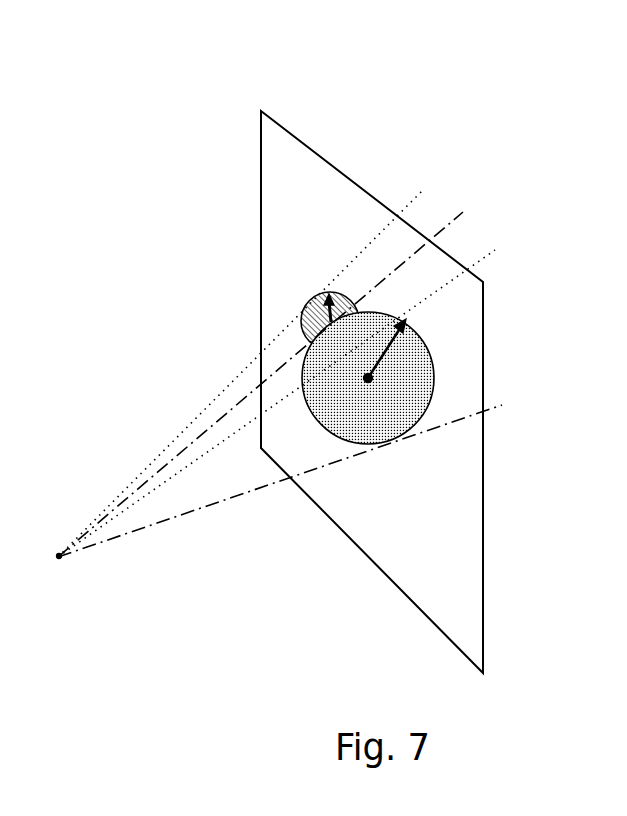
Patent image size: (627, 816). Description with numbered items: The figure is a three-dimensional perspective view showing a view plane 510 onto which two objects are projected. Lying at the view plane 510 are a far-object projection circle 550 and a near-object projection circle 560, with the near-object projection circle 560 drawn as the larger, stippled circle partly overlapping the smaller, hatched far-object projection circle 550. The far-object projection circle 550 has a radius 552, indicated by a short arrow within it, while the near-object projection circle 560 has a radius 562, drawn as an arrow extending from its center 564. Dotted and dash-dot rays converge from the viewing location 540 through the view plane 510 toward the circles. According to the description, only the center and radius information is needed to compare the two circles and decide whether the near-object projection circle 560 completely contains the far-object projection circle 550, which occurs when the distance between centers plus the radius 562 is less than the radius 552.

The view plane 510 is at (372, 344).
The viewpoint / eye position 540 is at (277, 440).
The far-object projection circle 550 is at (226, 301).
The radius 552 is at (220, 262).
The near-object projection circle 560 is at (451, 397).
The radius 562 is at (475, 323).
The center 564 is at (459, 350).